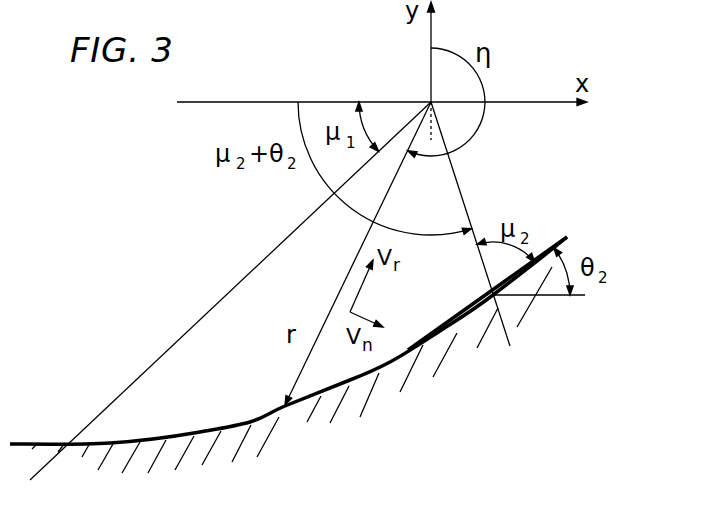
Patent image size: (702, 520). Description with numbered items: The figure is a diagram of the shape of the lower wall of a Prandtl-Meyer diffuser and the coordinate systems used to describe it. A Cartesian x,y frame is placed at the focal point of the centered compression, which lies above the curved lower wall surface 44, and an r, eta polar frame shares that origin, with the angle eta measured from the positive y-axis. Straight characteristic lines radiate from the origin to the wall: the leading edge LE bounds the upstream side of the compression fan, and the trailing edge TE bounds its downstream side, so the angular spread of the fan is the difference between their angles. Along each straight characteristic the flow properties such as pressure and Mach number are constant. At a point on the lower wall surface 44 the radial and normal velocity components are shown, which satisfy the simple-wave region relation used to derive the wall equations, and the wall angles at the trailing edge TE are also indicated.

The lower wall surface 44 is at (293, 418).
The leading edge LE is at (230, 298).
The trailing edge TE is at (487, 232).